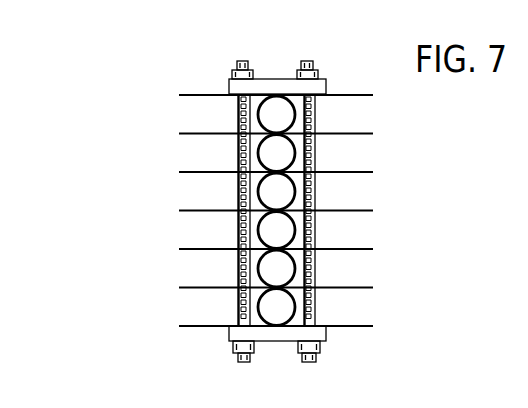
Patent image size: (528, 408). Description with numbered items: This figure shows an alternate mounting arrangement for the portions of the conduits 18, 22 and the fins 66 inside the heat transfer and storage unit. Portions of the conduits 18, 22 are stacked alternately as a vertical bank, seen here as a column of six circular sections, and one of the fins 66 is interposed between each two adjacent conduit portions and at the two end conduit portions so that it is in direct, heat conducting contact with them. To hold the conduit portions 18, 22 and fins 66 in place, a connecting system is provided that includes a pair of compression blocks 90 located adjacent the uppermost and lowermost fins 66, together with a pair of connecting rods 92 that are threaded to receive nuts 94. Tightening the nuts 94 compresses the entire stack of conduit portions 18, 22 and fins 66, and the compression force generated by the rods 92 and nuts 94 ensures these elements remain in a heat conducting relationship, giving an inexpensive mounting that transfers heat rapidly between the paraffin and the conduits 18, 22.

The conduit 18 is at (288, 158).
The conduit 22 is at (285, 121).
The fin 66 is at (196, 210).
The compression block 90 is at (327, 84).
The connecting rod 92 is at (238, 116).
The nut 94 is at (233, 71).